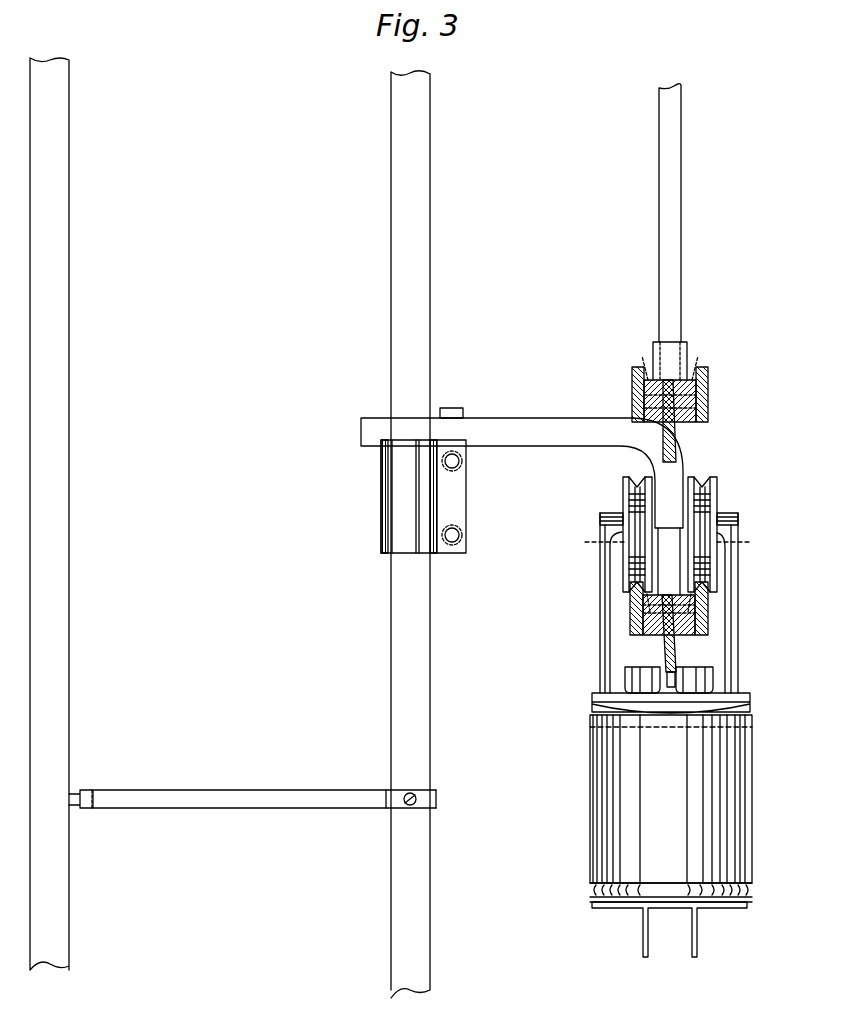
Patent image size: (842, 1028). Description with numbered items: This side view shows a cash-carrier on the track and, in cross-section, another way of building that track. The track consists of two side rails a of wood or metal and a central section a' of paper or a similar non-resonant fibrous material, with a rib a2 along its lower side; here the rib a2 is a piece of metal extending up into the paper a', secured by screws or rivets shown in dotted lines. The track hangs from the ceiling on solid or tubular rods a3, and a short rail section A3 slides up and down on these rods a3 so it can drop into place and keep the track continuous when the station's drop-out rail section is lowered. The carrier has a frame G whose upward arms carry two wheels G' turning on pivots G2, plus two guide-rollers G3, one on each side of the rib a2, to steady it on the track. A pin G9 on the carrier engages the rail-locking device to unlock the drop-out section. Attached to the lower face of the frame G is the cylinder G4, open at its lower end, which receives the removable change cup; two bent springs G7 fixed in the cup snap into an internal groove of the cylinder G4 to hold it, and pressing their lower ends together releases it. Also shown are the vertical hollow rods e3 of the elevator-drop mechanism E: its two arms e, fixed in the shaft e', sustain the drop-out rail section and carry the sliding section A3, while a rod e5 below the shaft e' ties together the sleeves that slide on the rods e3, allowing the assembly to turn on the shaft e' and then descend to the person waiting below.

The vertical hollow rods e3 is at (410, 534).
The elevator-drop mechanism E is at (511, 467).
The arms e is at (428, 496).
The shaft e' is at (462, 461).
The rod e5 is at (462, 535).
The rods a3 is at (676, 232).
The rail section A3 is at (686, 401).
The side rails a is at (668, 500).
The central section a' is at (671, 496).
The rib a2 is at (672, 426).
The wheels G' is at (683, 687).
The frame G is at (674, 613).
The pivots G2 is at (670, 532).
The pin G9 is at (657, 562).
The guide-rollers G3 is at (714, 660).
The cylinder G4 is at (671, 799).
The bent springs G7 is at (702, 933).